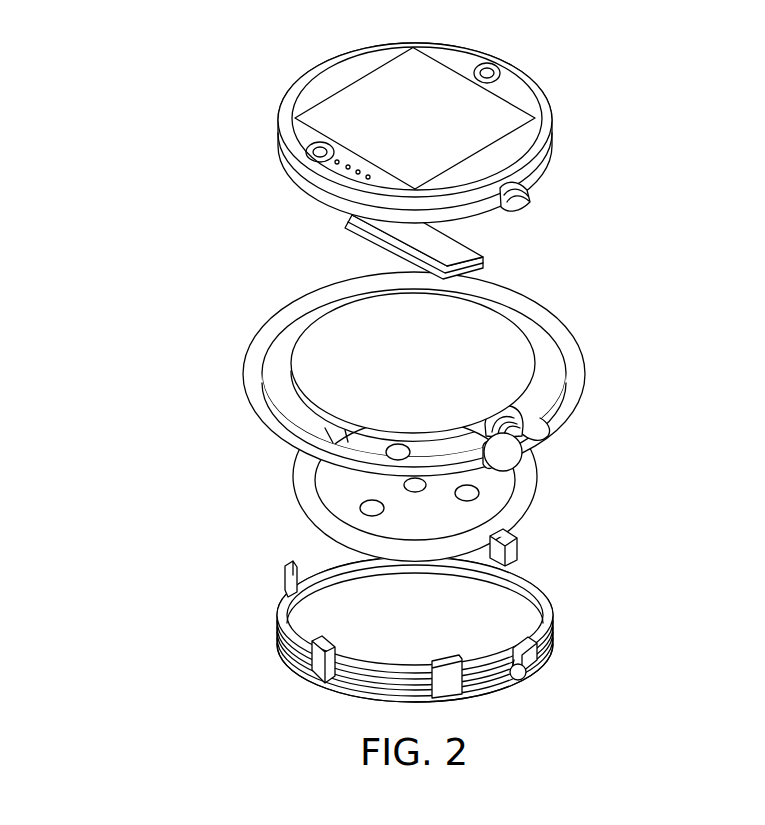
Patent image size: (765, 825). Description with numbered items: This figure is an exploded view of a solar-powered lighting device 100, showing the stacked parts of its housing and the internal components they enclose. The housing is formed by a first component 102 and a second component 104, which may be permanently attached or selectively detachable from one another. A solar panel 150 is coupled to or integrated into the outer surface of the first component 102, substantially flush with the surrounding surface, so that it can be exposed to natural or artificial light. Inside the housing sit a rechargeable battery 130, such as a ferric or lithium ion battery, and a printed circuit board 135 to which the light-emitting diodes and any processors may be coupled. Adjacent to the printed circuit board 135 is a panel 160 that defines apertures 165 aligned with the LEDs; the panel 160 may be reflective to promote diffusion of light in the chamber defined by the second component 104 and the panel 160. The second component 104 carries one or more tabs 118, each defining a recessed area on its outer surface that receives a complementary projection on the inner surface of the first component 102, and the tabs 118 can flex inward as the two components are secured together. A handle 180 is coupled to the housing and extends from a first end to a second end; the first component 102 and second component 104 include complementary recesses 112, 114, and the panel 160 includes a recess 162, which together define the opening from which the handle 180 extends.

The solar-powered lighting device 100 is at (124, 88).
The first component 102 is at (434, 129).
The second component 104 is at (505, 620).
The recess 112 is at (529, 198).
The recess 114 is at (524, 676).
The tab 118 is at (310, 646).
The rechargeable battery 130 is at (484, 262).
The printed circuit board 135 is at (502, 342).
The solar panel 150 is at (350, 108).
The panel 160 is at (528, 501).
The recess 162 is at (512, 521).
The apertures 165 is at (360, 506).
The handle 180 is at (580, 384).